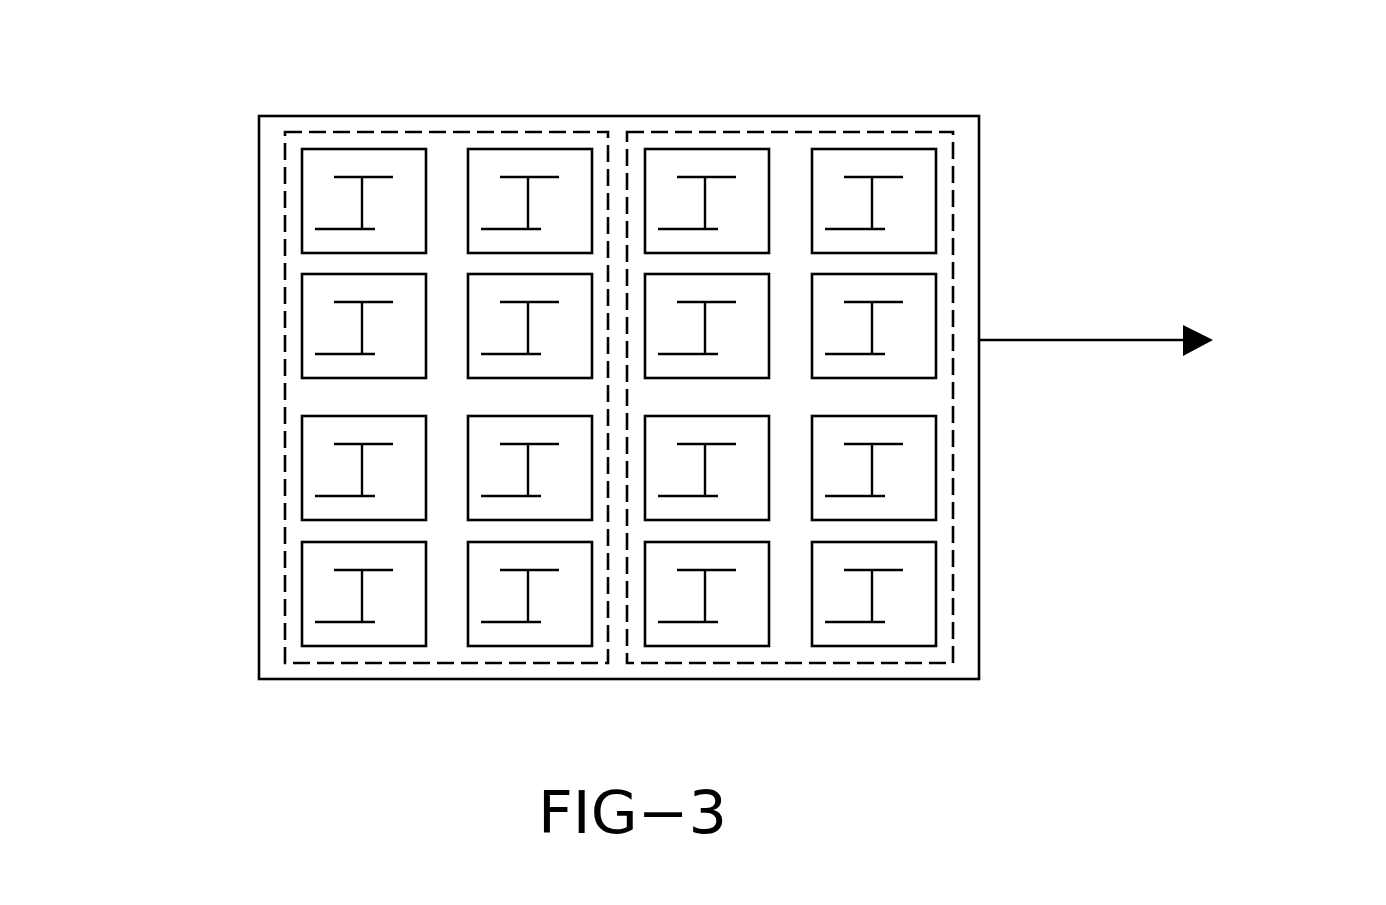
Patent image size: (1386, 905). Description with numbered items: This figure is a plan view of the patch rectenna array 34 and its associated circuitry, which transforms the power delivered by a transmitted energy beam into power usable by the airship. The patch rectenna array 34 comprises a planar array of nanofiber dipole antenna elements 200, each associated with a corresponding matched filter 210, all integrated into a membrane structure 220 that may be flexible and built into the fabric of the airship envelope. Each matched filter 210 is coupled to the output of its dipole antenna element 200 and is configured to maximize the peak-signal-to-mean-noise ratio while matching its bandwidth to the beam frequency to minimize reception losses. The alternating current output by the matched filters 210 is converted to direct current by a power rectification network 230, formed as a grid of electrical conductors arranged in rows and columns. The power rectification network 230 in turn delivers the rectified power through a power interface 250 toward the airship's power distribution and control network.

The patch rectenna array 34 is at (629, 409).
The dipole antenna element 200 is at (384, 176).
The matched filter 210 is at (332, 209).
The membrane structure 220 is at (937, 679).
The power rectification network 230 is at (447, 663).
The power interface 250 is at (1082, 338).